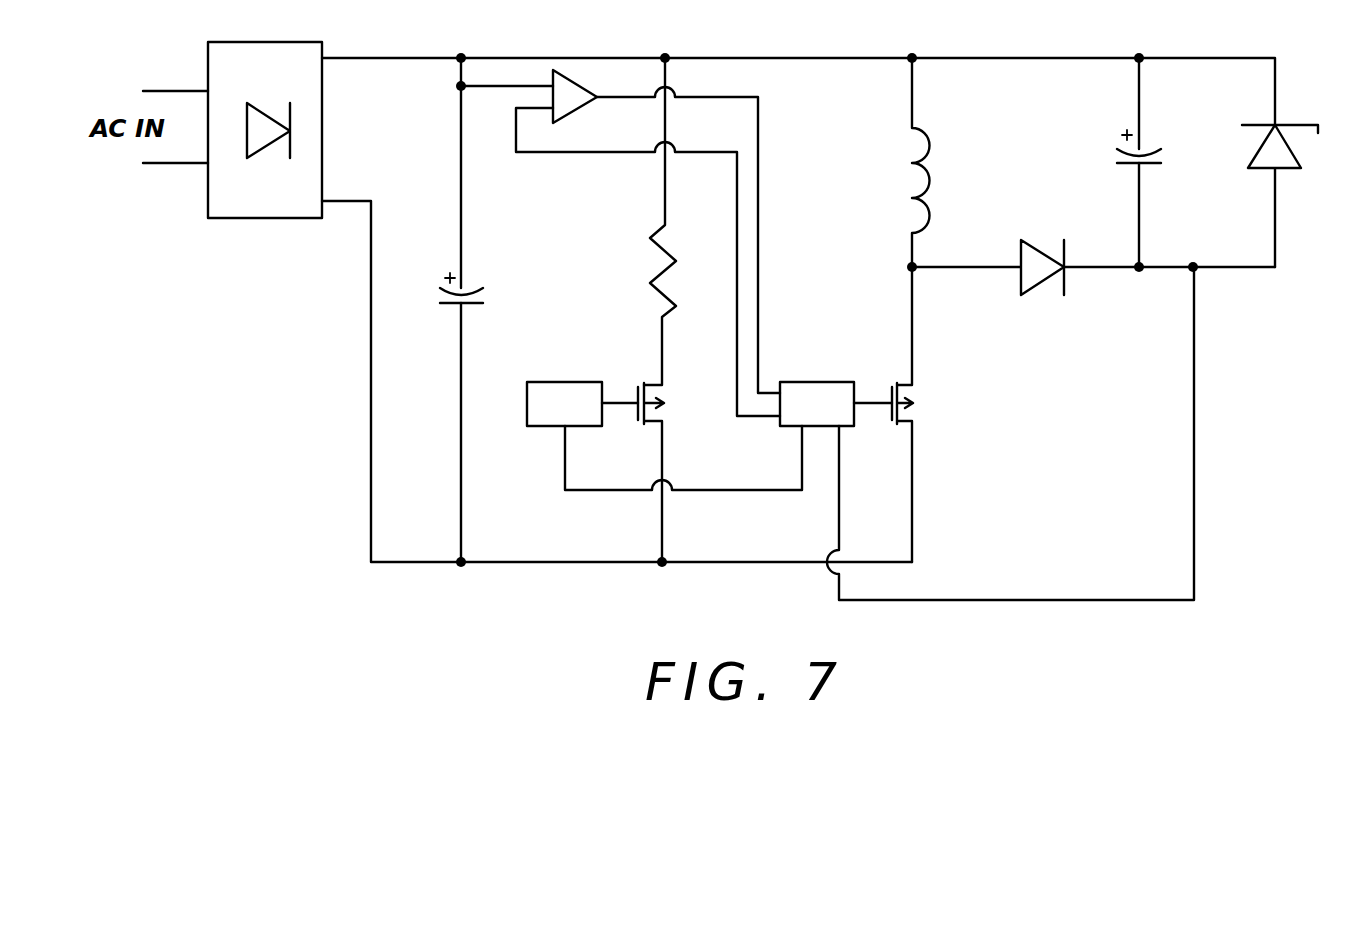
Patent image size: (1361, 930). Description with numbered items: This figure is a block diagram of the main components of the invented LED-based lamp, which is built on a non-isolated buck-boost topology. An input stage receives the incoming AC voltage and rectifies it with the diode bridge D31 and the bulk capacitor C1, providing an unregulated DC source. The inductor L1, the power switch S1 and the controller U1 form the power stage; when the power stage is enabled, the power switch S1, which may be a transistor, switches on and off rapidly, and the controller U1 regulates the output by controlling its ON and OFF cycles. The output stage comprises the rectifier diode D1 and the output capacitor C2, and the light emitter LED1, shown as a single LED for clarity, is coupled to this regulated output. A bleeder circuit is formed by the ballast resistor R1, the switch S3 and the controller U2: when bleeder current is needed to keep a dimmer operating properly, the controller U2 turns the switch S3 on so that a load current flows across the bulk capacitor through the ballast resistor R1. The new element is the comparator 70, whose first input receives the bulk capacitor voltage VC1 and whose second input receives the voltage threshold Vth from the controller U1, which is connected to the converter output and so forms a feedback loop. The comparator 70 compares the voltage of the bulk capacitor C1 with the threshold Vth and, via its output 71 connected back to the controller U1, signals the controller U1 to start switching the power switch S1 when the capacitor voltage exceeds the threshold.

The comparator 70 is at (567, 92).
The output 71 is at (758, 126).
The diode bridge D31 is at (265, 147).
The bulk capacitor C1 is at (468, 310).
The bulk capacitor voltage VC1 is at (478, 87).
The voltage threshold Vth is at (648, 262).
The ballast resistor R1 is at (677, 221).
The switch S3 is at (671, 472).
The controller U2 is at (664, 436).
The controller U1 is at (987, 433).
The power switch S1 is at (927, 414).
The inductor L1 is at (938, 162).
The rectifier diode D1 is at (1093, 284).
The output capacitor C2 is at (1146, 162).
The light emitter LED1 is at (1291, 196).